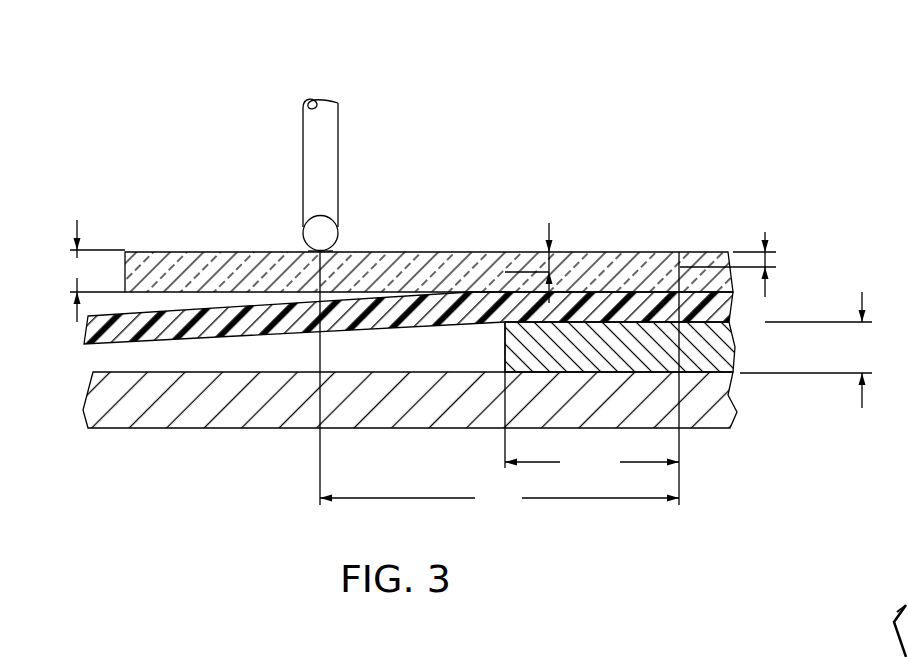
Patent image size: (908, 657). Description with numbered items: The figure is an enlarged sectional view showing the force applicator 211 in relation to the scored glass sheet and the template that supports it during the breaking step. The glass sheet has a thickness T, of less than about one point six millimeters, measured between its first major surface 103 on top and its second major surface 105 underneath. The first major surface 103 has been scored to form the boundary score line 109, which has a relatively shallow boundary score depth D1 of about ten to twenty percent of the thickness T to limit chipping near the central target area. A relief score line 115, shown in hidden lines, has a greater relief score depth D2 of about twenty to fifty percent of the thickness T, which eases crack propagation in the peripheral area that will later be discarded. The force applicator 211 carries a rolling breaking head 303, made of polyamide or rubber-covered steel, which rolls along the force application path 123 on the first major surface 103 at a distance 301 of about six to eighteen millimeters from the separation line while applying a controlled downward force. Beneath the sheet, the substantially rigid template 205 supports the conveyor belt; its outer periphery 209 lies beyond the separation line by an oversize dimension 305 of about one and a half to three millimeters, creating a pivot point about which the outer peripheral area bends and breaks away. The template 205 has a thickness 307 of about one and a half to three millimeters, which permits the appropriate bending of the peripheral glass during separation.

The first major surface 103 is at (717, 248).
The second major surface 105 is at (721, 300).
The boundary score line 109 is at (681, 264).
The relief score line 115 is at (497, 266).
The force application path 123 is at (304, 240).
The template 205 is at (698, 368).
The outer periphery 209 is at (505, 348).
The force applicator 211 is at (338, 112).
The distance 301 is at (499, 382).
The rolling breaking head 303 is at (303, 233).
The oversize dimension 305 is at (592, 399).
The thickness 307 is at (812, 350).
The boundary score depth D1 is at (766, 258).
The relief score depth D2 is at (549, 252).
The thickness T is at (97, 271).